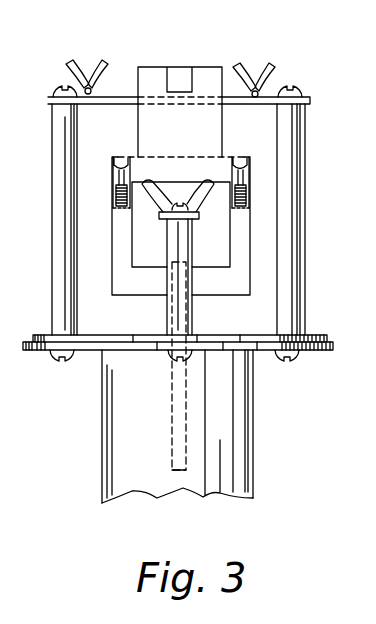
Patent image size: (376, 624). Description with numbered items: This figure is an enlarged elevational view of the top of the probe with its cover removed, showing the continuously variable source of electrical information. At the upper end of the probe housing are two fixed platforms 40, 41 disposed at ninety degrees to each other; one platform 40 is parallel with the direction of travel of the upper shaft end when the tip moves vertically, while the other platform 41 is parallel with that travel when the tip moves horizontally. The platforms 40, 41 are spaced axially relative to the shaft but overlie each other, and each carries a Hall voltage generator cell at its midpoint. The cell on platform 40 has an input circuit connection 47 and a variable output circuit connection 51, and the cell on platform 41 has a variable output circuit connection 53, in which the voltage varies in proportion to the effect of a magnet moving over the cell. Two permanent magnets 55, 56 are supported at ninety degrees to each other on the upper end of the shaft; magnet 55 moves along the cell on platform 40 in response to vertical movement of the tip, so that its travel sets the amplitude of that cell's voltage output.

The fixed platform 40 is at (120, 97).
The fixed platform 41 is at (196, 221).
The input circuit connection 47 is at (256, 70).
The variable output circuit connection 51 is at (94, 53).
The variable output circuit connection 53 is at (180, 170).
The permanent magnet 55 is at (175, 66).
The permanent magnet 56 is at (206, 170).